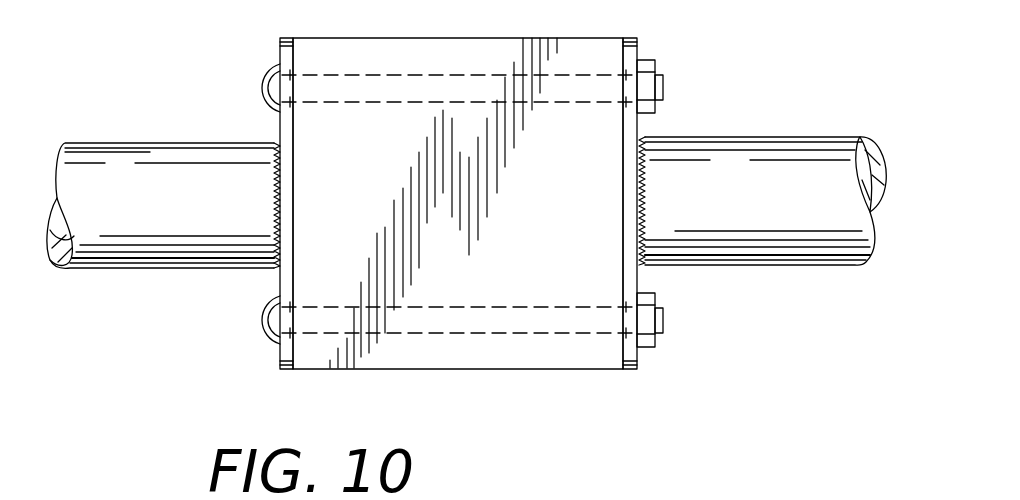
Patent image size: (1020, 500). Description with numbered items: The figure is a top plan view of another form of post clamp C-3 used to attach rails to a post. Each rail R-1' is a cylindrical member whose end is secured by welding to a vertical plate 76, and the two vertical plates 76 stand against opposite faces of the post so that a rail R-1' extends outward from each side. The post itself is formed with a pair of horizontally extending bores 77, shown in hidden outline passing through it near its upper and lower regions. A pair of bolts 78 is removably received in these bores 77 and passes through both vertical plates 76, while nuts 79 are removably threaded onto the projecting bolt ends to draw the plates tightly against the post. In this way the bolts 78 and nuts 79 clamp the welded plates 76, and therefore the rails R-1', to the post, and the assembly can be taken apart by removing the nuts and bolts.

The post clamp C-3 is at (280, 48).
The rail R-1' is at (466, 174).
The vertical plate 76 is at (290, 283).
The horizontally extending bore 77 is at (445, 75).
The bolt 78 is at (272, 92).
The nut 79 is at (648, 80).